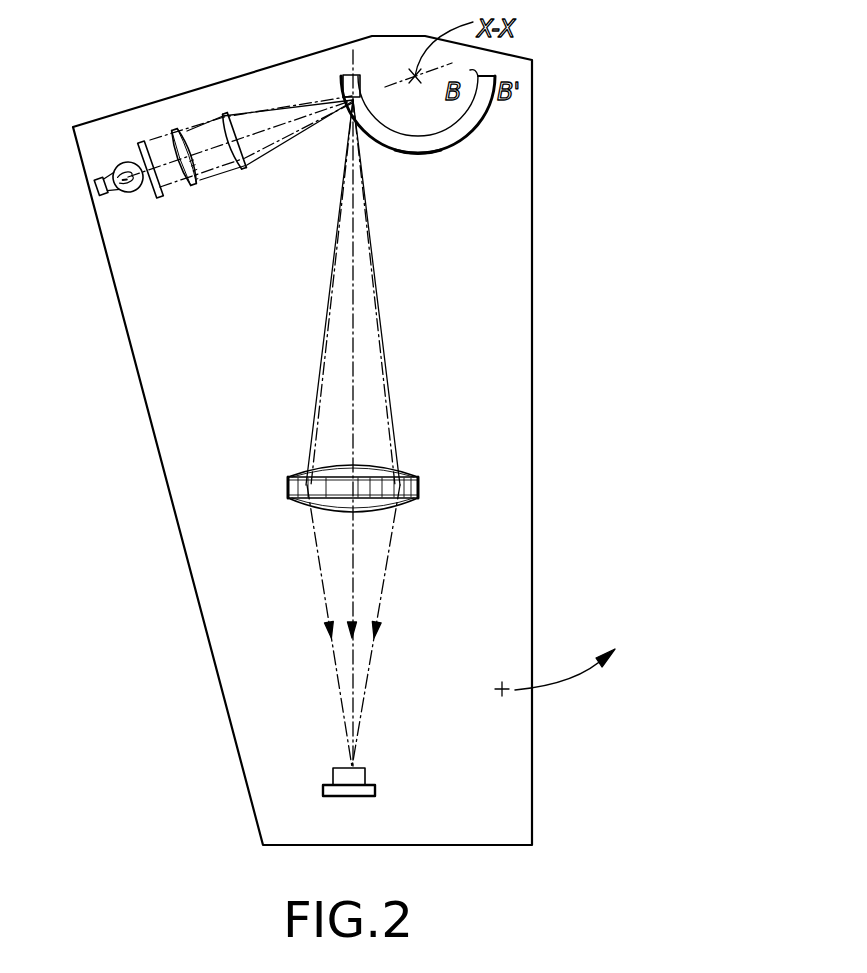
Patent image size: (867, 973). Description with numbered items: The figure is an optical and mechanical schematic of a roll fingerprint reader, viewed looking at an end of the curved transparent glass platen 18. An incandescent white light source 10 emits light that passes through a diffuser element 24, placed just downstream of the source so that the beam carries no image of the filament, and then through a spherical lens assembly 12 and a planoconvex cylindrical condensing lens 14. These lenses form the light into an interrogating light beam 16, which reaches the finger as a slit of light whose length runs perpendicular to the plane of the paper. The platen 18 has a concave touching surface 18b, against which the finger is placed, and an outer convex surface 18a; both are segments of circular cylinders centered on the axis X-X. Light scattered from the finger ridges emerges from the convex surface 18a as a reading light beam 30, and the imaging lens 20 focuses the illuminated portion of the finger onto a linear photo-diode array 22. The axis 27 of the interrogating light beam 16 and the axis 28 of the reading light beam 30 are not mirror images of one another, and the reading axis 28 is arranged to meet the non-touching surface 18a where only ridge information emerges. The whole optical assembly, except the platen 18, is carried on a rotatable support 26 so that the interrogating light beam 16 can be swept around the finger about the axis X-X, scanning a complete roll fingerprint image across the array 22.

The incandescent white light source 10 is at (114, 168).
The spherical lens assembly 12 is at (180, 130).
The planoconvex cylindrical condensing lens 14 is at (227, 113).
The interrogating light beam 16 is at (260, 108).
The curved transparent glass platen 18 is at (460, 110).
The outer convex surface 18a is at (421, 153).
The concave touching surface 18b is at (474, 80).
The imaging lens 20 is at (418, 482).
The linear photo-diode array 22 is at (365, 777).
The diffuser element 24 is at (150, 200).
The rotatable support 26 is at (526, 348).
The axis of the interrogating light beam 27 is at (267, 130).
The axis of the reading light beam 28 is at (354, 353).
The reading light beam 30 is at (377, 272).